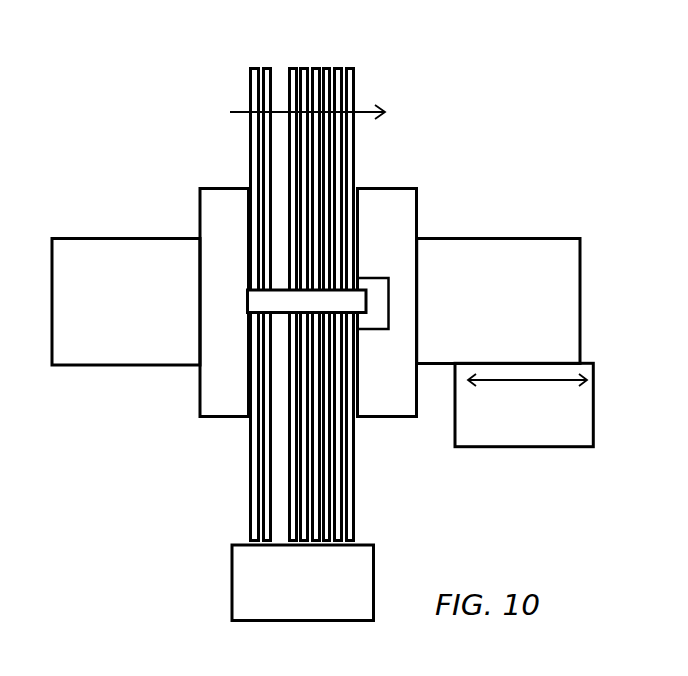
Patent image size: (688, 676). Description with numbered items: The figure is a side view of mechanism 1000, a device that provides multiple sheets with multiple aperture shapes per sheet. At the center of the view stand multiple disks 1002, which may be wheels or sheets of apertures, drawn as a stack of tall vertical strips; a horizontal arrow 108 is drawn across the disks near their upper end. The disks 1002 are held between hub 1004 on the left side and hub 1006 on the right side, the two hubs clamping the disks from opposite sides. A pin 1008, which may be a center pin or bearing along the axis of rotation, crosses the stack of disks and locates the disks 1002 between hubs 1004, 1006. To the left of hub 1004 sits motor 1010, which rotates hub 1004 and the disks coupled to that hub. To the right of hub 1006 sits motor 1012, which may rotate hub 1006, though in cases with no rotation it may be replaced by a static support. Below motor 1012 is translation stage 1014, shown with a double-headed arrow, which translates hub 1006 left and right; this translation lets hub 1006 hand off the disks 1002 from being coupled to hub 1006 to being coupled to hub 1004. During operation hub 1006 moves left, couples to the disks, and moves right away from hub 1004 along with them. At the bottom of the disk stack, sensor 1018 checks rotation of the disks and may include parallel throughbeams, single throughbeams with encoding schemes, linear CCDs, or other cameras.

The mechanism 1000 is at (516, 72).
The disks 1002 is at (259, 305).
The direction of fiber feed 108 is at (373, 104).
The hub 1004 is at (189, 277).
The hub 1006 is at (414, 280).
The pin 1008 is at (248, 289).
The motor 1010 is at (148, 308).
The motor 1012 is at (521, 310).
The translation stage 1014 is at (546, 414).
The sensor 1018 is at (325, 594).